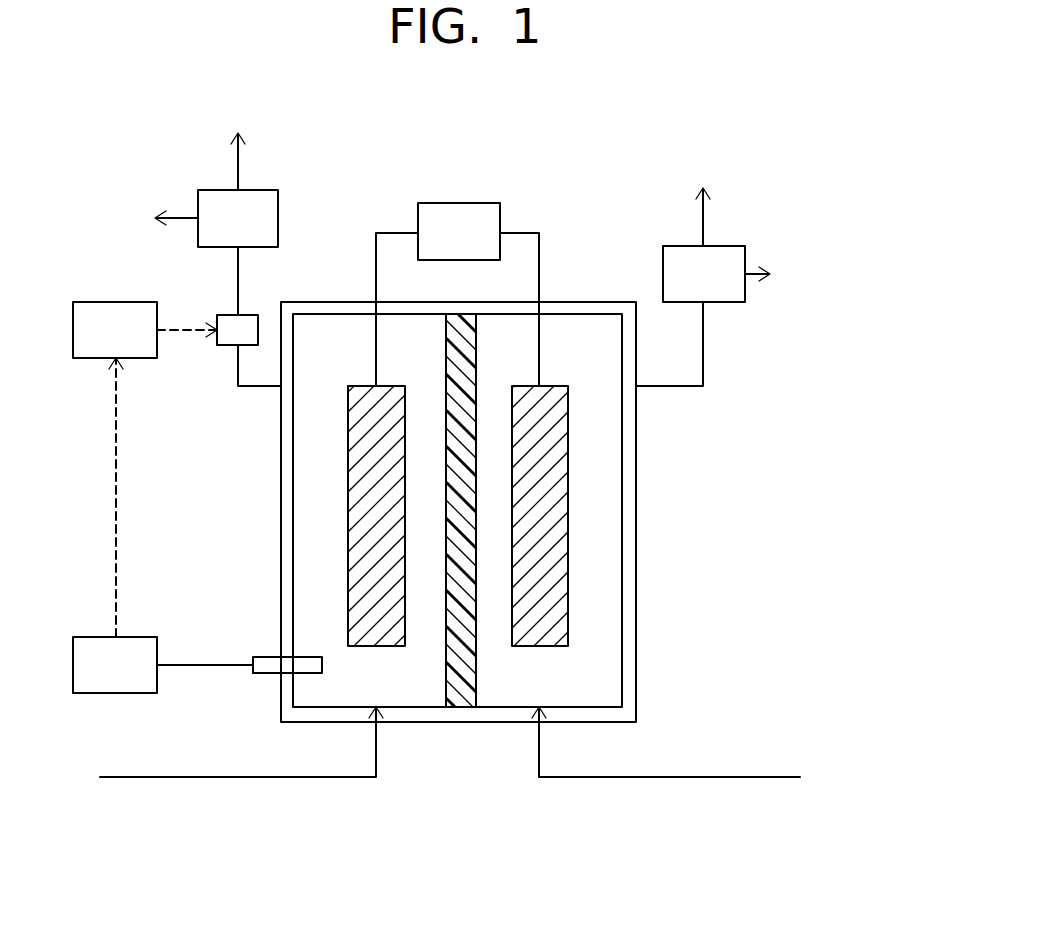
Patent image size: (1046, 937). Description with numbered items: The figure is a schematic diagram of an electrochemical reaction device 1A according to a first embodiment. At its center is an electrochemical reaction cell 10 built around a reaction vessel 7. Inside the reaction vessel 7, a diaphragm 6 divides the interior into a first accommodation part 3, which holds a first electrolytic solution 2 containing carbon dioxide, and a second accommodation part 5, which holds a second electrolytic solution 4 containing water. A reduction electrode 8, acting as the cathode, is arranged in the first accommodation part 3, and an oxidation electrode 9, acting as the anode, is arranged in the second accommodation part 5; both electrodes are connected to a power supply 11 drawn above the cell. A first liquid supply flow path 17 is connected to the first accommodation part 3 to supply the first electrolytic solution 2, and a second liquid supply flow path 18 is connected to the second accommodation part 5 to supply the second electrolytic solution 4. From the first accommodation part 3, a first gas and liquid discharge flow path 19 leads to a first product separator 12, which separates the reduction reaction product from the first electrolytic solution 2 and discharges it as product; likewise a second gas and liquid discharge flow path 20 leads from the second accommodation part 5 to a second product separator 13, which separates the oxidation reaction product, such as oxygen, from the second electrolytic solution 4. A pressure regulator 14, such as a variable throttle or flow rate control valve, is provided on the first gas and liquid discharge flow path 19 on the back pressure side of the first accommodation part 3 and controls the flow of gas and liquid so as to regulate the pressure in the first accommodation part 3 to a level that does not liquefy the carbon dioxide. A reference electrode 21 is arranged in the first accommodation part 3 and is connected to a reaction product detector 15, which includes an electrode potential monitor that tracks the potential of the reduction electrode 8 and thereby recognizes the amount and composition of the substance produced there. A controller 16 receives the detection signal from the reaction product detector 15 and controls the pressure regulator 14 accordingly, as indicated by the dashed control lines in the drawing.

The electrochemical reaction device 1A is at (598, 189).
The first electrolytic solution 2 is at (410, 680).
The first accommodation part 3 is at (310, 554).
The second electrolytic solution 4 is at (572, 680).
The second accommodation part 5 is at (602, 552).
The diaphragm 6 is at (462, 334).
The reaction vessel 7 is at (636, 600).
The reduction electrode 8 is at (375, 473).
The oxidation electrode 9 is at (545, 470).
The electrochemical reaction cell 10 is at (459, 735).
The power supply 11 is at (418, 215).
The first product separator 12 is at (198, 190).
The second product separator 13 is at (745, 246).
The pressure regulator 14 is at (218, 316).
The reaction product detector 15 is at (95, 637).
The controller 16 is at (88, 358).
The first liquid supply flow path 17 is at (265, 778).
The second liquid supply flow path 18 is at (640, 778).
The first gas and liquid discharge flow path 19 is at (238, 291).
The second gas and liquid discharge flow path 20 is at (672, 388).
The reference electrode 21 is at (262, 657).